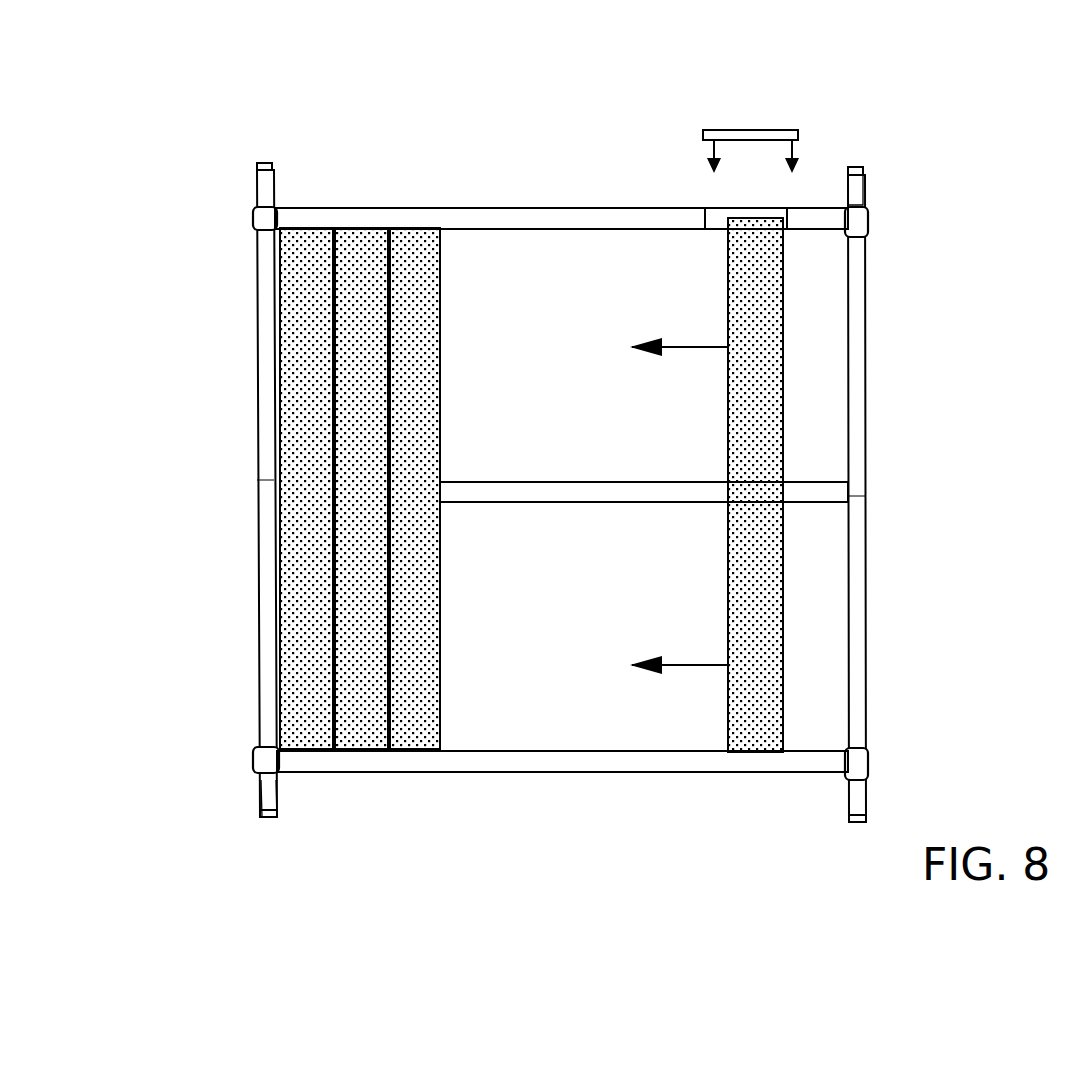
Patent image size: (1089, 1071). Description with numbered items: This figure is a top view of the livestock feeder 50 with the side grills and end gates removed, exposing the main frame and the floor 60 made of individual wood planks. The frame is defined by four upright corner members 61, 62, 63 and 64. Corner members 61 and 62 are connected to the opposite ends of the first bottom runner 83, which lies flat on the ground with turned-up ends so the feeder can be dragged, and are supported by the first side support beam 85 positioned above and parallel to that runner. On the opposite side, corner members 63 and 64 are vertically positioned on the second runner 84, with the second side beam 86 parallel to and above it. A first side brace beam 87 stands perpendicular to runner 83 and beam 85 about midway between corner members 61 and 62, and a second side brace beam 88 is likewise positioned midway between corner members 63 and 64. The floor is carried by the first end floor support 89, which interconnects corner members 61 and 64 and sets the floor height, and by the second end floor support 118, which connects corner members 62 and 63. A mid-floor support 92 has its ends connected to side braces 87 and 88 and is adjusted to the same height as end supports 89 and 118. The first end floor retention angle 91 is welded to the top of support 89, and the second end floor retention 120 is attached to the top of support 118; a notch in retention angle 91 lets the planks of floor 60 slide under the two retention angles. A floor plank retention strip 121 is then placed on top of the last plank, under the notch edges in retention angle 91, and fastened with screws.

The gate assembly 50 is at (541, 123).
The floor 60 is at (415, 273).
The frame corner member 61 is at (255, 218).
The frame corner member 62 is at (252, 760).
The corner member 63 is at (870, 765).
The corner member 64 is at (868, 222).
The first bottom runner 83 is at (265, 790).
The second runner 84 is at (865, 190).
The first side support beam 85 is at (258, 405).
The second side beam 86 is at (865, 440).
The first side brace beam 87 is at (250, 487).
The second side brace beam 88 is at (865, 492).
The first end floor support 89 is at (715, 217).
The first end floor retention angle 91 is at (560, 216).
The mid-floor support 92 is at (525, 490).
The second end floor support 118 is at (715, 778).
The second end floor retention 120 is at (565, 762).
The floor plank retention strip 121 is at (810, 122).